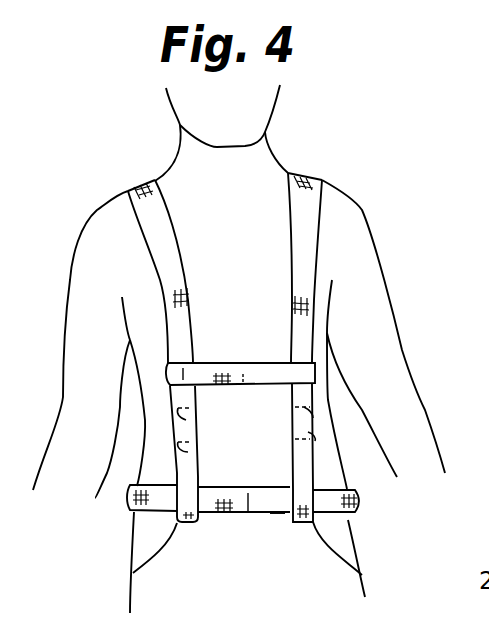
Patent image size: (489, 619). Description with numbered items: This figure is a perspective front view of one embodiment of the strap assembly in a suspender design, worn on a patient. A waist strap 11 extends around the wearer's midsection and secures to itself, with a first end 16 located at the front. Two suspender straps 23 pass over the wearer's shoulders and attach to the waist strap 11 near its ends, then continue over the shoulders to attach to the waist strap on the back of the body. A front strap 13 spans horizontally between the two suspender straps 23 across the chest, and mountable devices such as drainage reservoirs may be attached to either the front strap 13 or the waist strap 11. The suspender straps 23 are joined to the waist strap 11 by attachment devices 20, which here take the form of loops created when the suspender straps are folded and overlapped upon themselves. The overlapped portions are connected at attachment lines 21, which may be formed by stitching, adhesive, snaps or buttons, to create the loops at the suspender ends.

The waist strap 11 is at (355, 516).
The front strap 13 is at (298, 373).
The first end 16 is at (278, 515).
The attachment device 20 is at (130, 573).
The attachment line 21 is at (178, 470).
The suspender strap 23 is at (138, 182).